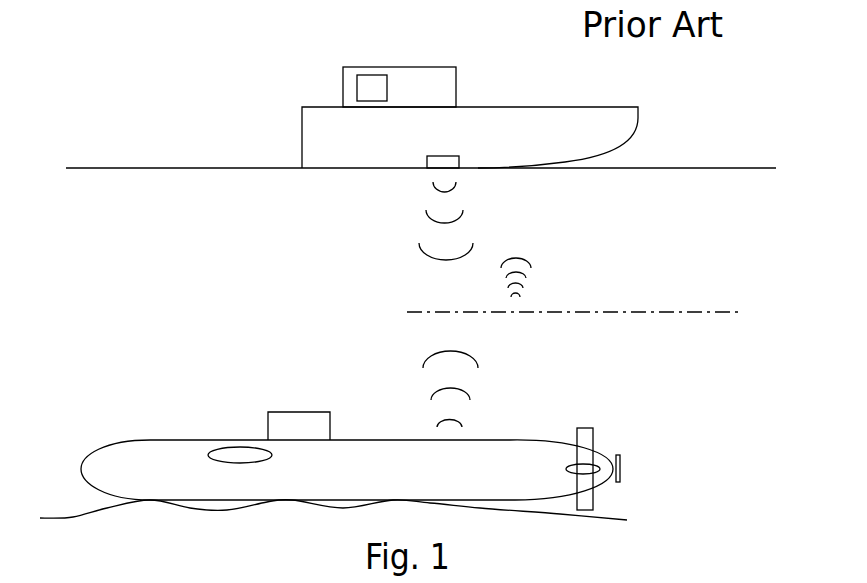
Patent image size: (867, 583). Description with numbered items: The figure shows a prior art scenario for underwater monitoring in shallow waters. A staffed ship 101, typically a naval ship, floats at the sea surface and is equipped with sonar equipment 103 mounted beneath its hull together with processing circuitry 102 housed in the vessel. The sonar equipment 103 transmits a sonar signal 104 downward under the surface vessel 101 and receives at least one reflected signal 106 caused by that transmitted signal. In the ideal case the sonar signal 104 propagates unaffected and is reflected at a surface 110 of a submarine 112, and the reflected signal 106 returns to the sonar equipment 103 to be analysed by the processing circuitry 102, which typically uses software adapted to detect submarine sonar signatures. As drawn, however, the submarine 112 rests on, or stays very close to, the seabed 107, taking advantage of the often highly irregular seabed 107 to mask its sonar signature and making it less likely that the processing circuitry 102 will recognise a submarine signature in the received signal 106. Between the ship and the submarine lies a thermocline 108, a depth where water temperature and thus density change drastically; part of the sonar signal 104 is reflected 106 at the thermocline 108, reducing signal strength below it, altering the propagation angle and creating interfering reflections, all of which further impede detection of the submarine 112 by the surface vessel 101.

The staffed ship 101 is at (333, 68).
The processing circuitry 102 is at (380, 84).
The sonar equipment 103 is at (432, 169).
The sonar signal 104 is at (410, 252).
The reflected signal 106 is at (530, 252).
The seabed 107 is at (617, 515).
The thermocline 108 is at (623, 312).
The surface of a submarine 110 is at (482, 439).
The submarine 112 is at (287, 387).